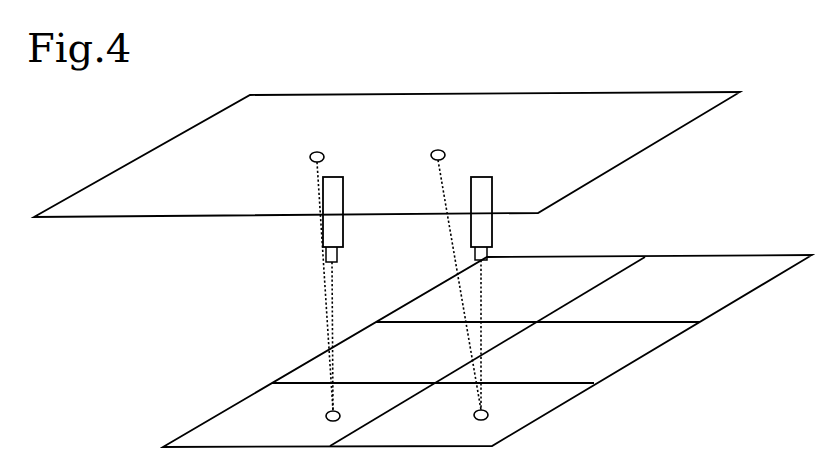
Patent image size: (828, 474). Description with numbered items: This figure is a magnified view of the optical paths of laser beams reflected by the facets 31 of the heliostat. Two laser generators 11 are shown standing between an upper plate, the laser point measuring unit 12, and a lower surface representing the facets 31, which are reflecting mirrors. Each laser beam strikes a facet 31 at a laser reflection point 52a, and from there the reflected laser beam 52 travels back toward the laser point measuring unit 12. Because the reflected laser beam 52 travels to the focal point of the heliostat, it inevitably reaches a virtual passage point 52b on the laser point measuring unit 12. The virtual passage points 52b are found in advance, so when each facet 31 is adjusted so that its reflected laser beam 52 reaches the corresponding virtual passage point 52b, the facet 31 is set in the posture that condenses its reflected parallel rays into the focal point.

The laser generator 11 is at (492, 228).
The laser point measuring unit 12 is at (245, 117).
The facet (reflecting mirror) 31 is at (730, 285).
The reflected laser beam 52 is at (323, 292).
The laser reflection point 52a is at (488, 415).
The virtual passage point 52b is at (440, 150).